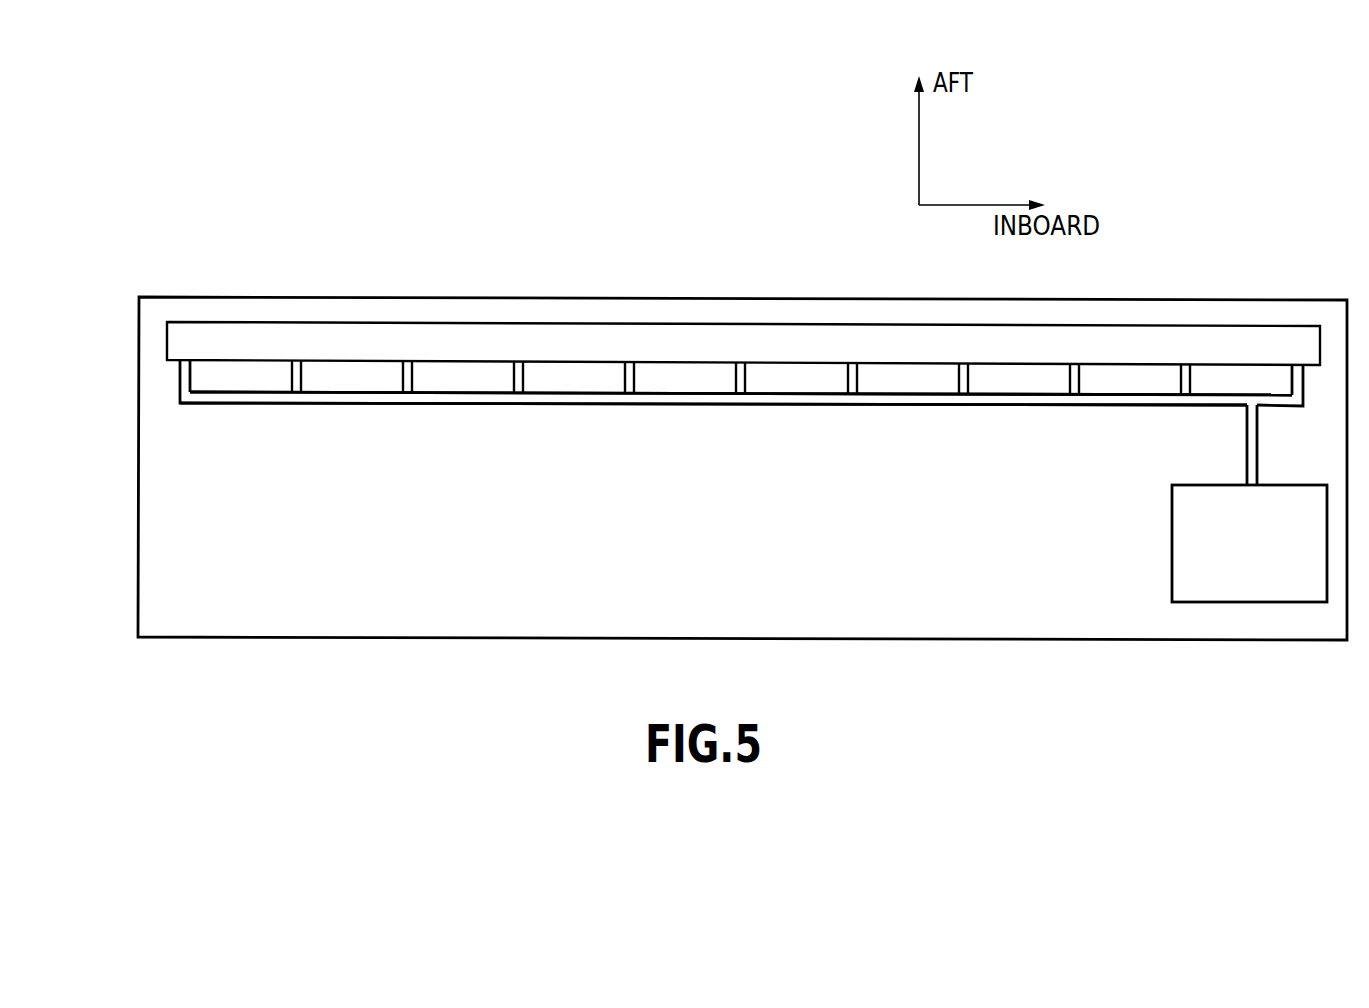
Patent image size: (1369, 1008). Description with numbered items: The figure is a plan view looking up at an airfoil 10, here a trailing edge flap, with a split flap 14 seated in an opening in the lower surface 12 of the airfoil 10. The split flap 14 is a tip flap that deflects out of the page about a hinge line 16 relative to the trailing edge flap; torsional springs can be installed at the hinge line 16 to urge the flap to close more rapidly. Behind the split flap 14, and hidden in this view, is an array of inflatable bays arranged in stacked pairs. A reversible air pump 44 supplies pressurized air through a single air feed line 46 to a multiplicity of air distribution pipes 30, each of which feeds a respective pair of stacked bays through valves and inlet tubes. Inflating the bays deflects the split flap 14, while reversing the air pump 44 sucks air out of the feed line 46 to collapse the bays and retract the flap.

The airfoil 10 is at (641, 294).
The lower surface 12 is at (170, 525).
The split flap 14 is at (175, 335).
The hinge line 16 is at (156, 367).
The air distribution pipe 30 is at (513, 375).
The air pump 44 is at (1172, 537).
The air feed line 46 is at (723, 407).